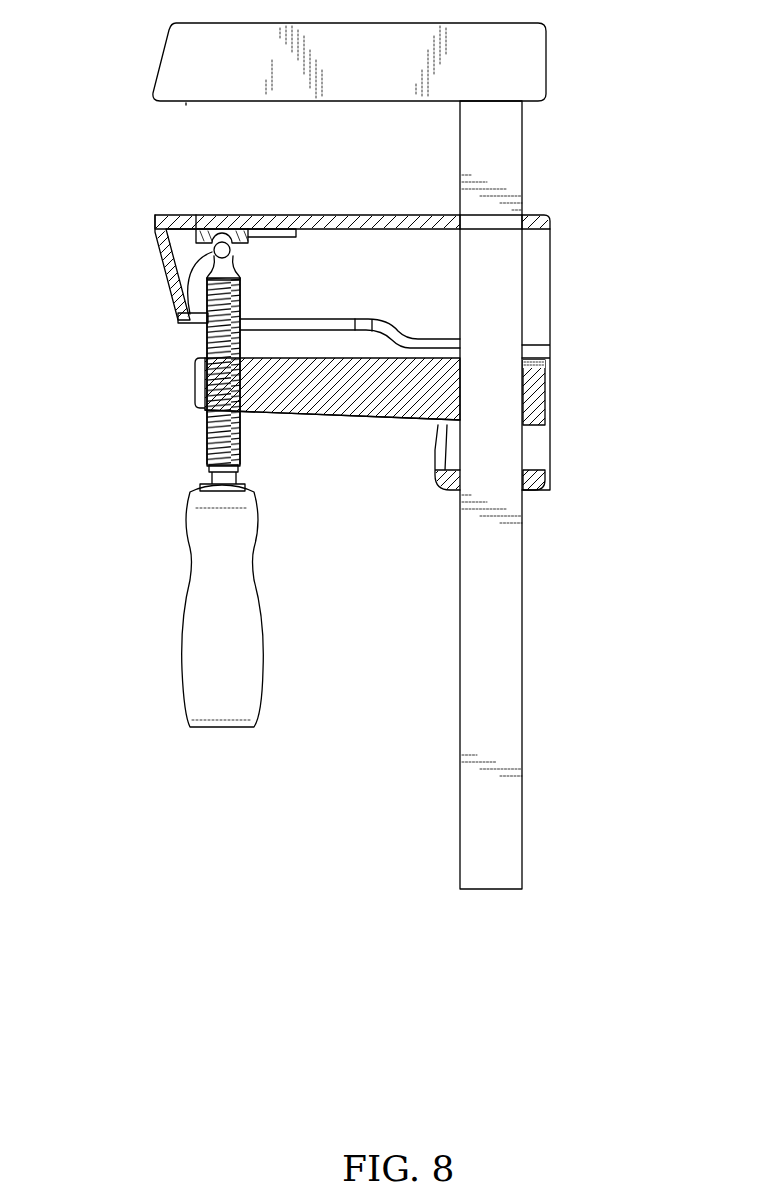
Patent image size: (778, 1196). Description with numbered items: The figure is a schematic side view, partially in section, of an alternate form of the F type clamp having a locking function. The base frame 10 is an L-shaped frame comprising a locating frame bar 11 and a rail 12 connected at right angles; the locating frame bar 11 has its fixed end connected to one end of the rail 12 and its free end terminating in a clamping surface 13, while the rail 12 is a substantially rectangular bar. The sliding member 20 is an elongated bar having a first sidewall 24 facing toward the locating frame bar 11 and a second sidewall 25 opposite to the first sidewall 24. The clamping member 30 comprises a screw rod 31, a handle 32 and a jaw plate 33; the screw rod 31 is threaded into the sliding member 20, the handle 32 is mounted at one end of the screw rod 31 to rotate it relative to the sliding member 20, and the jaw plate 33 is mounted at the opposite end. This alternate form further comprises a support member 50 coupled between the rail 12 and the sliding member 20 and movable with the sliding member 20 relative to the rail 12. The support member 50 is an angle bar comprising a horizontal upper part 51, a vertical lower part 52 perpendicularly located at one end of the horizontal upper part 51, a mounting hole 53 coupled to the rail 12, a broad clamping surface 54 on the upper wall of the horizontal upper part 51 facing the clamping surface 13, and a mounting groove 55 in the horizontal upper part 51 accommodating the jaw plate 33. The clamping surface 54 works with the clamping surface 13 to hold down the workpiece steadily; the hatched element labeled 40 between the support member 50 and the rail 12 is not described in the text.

The base frame 10 is at (636, 22).
The locating frame bar 11 is at (530, 78).
The rail 12 is at (501, 124).
The clamping surface 13 is at (185, 102).
The sliding member 20 is at (290, 420).
The first sidewall 24 is at (346, 356).
The second sidewall 25 is at (360, 423).
The clamping member 30 is at (115, 316).
The screw rod 31 is at (200, 384).
The handle 32 is at (207, 468).
The jaw plate 33 is at (186, 320).
The pad 40 is at (548, 370).
The support member 50 is at (558, 229).
The horizontal upper part 51 is at (538, 278).
The vertical lower part 52 is at (538, 448).
The mounting hole 53 is at (457, 490).
The clamping surface 54 is at (257, 215).
The mounting groove 55 is at (185, 233).